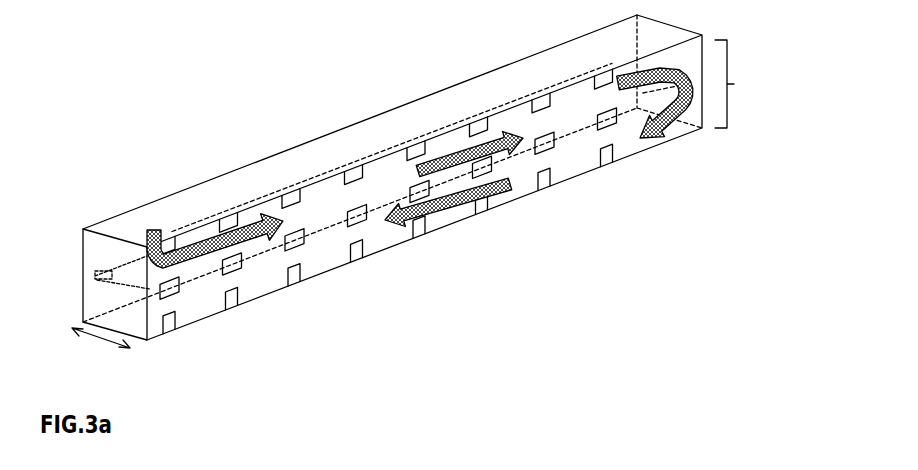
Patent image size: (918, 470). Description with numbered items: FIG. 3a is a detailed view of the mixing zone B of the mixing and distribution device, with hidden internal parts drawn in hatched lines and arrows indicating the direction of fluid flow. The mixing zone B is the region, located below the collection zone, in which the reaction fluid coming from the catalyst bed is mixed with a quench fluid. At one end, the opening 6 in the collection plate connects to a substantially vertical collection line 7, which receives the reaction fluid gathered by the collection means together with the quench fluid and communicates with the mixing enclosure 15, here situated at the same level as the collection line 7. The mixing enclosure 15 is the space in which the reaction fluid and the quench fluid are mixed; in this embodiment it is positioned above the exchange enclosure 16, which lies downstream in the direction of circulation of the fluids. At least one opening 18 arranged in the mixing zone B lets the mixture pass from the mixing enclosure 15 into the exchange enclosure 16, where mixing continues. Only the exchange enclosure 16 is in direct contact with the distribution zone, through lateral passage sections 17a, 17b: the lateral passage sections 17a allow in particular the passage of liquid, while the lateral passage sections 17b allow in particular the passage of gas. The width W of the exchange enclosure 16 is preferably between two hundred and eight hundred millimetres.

The opening 6 is at (110, 225).
The collection line 7 is at (127, 268).
The mixing enclosure 15 is at (333, 197).
The exchange enclosure 16 is at (207, 300).
The lateral passage section 17a is at (355, 228).
The lateral passage section 17b is at (483, 208).
The opening 18 is at (685, 122).
The width W is at (101, 350).
The mixing zone B is at (746, 84).